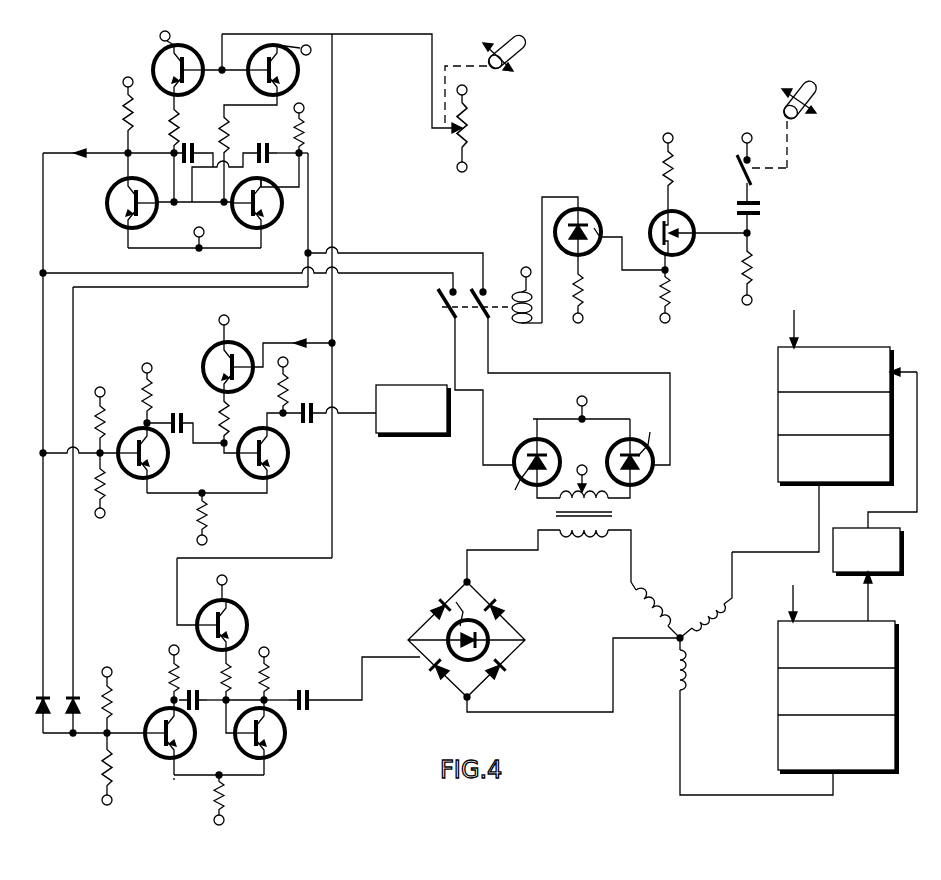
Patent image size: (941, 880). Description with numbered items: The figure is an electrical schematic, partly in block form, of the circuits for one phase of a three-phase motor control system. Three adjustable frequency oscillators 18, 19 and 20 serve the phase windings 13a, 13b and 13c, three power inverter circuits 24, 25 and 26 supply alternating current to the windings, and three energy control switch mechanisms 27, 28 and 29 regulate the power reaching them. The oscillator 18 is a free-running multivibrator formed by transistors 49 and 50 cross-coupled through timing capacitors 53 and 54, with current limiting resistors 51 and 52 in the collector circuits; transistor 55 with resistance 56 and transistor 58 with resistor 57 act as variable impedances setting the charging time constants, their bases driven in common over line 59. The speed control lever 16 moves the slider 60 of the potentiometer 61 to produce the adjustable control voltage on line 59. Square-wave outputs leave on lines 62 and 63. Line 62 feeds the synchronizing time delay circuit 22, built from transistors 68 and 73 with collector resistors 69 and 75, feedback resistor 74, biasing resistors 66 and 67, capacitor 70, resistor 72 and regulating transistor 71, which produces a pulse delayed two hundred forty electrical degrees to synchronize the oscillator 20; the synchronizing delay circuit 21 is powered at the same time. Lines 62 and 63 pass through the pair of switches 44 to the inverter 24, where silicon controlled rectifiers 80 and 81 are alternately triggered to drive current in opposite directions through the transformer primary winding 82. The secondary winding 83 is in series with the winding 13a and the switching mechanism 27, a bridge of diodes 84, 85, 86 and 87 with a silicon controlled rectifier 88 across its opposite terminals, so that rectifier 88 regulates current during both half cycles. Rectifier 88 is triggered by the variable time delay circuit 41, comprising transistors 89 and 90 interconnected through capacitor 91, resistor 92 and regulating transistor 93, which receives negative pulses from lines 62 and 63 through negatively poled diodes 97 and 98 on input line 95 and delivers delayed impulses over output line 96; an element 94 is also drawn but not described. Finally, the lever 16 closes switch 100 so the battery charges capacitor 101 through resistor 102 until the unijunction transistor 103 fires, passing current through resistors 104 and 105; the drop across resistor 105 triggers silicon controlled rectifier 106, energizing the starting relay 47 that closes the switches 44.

The first phase winding 13a is at (662, 593).
The second phase winding 13b is at (712, 597).
The third phase winding 13c is at (672, 670).
The speed control lever 16 is at (512, 72).
The oscillator circuit 18 is at (86, 244).
The adjustable frequency oscillator 19 is at (777, 372).
The adjustable frequency oscillator 20 is at (897, 652).
The synchronizing delay circuit 21 is at (902, 559).
The synchronizing time delay circuit 22 is at (285, 312).
The inverter circuit 24 is at (588, 443).
The power inverter circuit 25 is at (778, 412).
The power inverter circuit 26 is at (897, 699).
The switching mechanism 27 is at (580, 612).
The energy control switch mechanism 28 is at (778, 452).
The energy control switch mechanism 29 is at (897, 748).
The variable time delay circuit 41 is at (308, 789).
The pair of switches 44 is at (442, 312).
The starting relay 47 is at (510, 293).
The transistor 49 is at (140, 228).
The transistor 50 is at (245, 226).
The current limiting resistor 51 is at (118, 118).
The current limiting resistor 52 is at (300, 125).
The timing capacitor 53 is at (189, 143).
The timing capacitor 54 is at (266, 144).
The transistor 55 is at (183, 93).
The resistance 56 is at (134, 129).
The resistor 57 is at (229, 132).
The transistor 58 is at (251, 82).
The line 59 is at (350, 36).
The variable slider 60 is at (436, 130).
The potentiometer 61 is at (468, 123).
The output line 62 is at (109, 150).
The output line 63 is at (312, 190).
The resistor 66 is at (110, 409).
The resistor 67 is at (104, 503).
The transistor 68 is at (168, 460).
The resistor 69 is at (152, 383).
The capacitor 70 is at (188, 412).
The regulating transistor 71 is at (227, 344).
The resistor 72 is at (231, 412).
The transistor 73 is at (240, 470).
The feedback resistor 74 is at (208, 520).
The collector resistor 75 is at (290, 388).
The silicon controlled power rectifier 80 is at (523, 474).
The silicon controlled power rectifier 81 is at (633, 447).
The transformer primary winding 82 is at (610, 500).
The secondary winding 83 is at (596, 540).
The diode 84 is at (432, 600).
The diode 85 is at (503, 606).
The diode 86 is at (515, 673).
The diode 87 is at (443, 680).
The silicon controlled rectifier 88 is at (466, 596).
The transistor 89 is at (193, 745).
The transistor 90 is at (286, 738).
The capacitor 91 is at (203, 695).
The resistor 92 is at (229, 690).
The regulating transistor 93 is at (246, 618).
The resistor 94 is at (116, 770).
The input line 95 is at (52, 740).
The output line 96 is at (360, 702).
The diode 97 is at (46, 695).
The diode 98 is at (78, 685).
The switch 100 is at (738, 166).
The capacitor 101 is at (761, 213).
The resistor 102 is at (758, 275).
The unijunction transistor 103 is at (656, 208).
The resistor 104 is at (660, 155).
The resistor 105 is at (660, 290).
The silicon controlled rectifier 106 is at (581, 198).